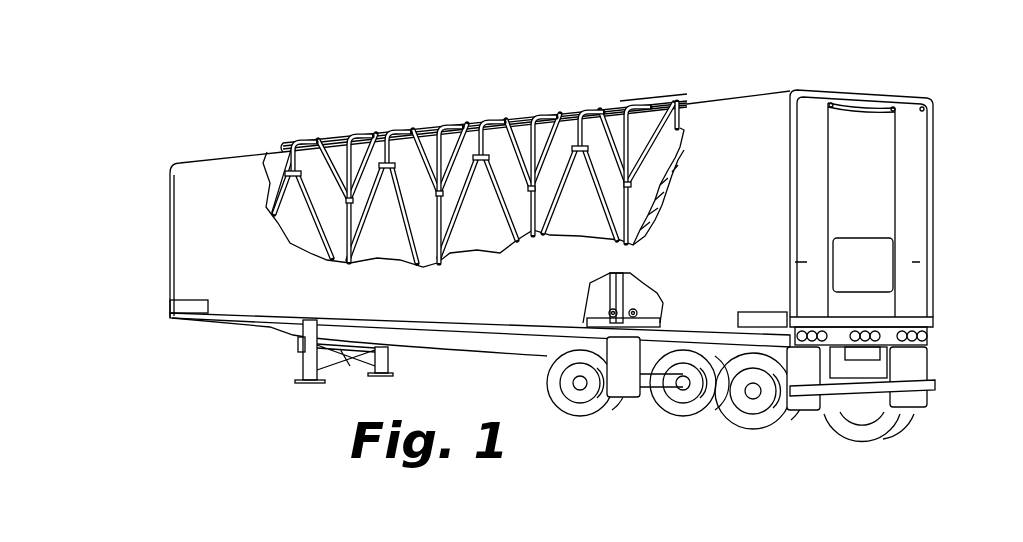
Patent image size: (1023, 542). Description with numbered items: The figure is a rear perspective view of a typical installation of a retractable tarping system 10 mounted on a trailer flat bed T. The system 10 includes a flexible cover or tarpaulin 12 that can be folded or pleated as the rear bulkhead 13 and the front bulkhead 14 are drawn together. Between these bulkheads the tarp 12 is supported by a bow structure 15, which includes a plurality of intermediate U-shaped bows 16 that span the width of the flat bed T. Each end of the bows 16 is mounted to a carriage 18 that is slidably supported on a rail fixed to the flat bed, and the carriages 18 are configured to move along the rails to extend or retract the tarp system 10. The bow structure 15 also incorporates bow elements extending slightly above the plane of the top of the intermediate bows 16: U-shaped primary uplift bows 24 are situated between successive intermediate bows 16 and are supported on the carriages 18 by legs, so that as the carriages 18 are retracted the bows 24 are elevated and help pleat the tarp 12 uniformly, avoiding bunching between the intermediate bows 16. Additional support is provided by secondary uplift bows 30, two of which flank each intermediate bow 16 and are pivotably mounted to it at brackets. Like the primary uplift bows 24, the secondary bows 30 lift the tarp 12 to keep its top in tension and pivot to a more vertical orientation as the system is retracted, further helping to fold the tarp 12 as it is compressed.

The retractable tarping system 10 is at (936, 96).
The flexible cover or tarpaulin 12 is at (760, 107).
The rear bulkhead 13 is at (917, 175).
The front bulkhead 14 is at (172, 190).
The bow structure 15 is at (641, 100).
The intermediate U-shaped bow 16 is at (352, 136).
The carriage 18 is at (633, 295).
The primary uplift bow 24 is at (307, 143).
The secondary uplift bow 30 is at (368, 135).
The trailer flat bed T is at (930, 338).